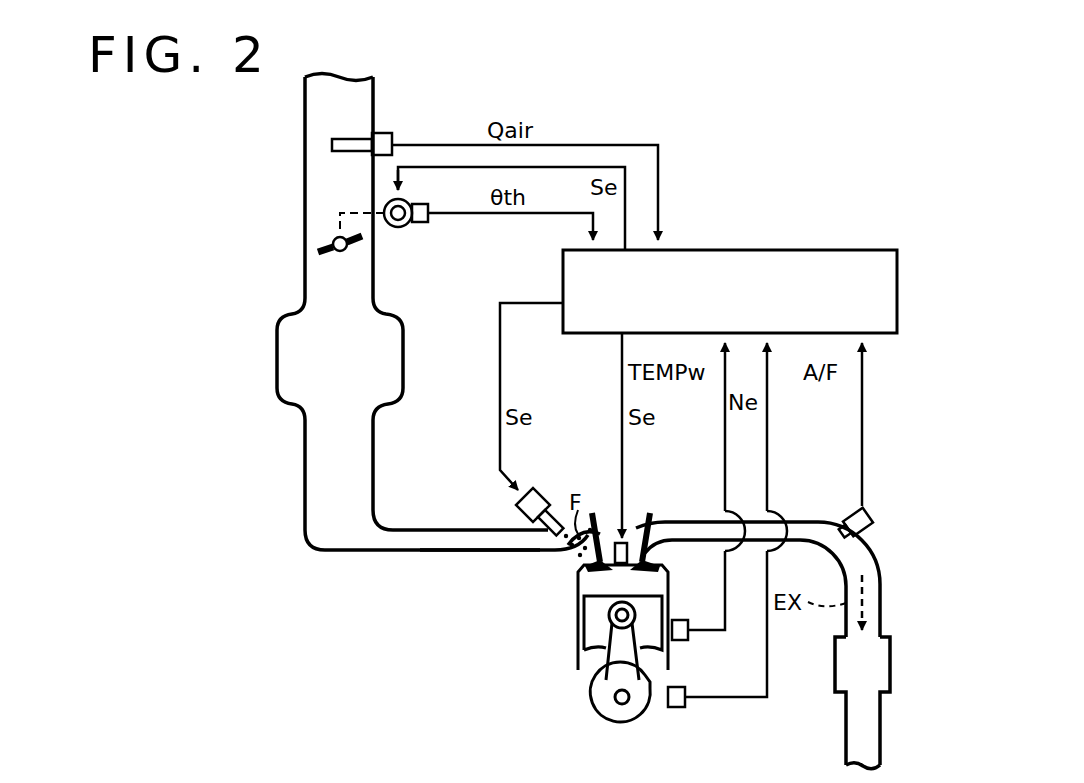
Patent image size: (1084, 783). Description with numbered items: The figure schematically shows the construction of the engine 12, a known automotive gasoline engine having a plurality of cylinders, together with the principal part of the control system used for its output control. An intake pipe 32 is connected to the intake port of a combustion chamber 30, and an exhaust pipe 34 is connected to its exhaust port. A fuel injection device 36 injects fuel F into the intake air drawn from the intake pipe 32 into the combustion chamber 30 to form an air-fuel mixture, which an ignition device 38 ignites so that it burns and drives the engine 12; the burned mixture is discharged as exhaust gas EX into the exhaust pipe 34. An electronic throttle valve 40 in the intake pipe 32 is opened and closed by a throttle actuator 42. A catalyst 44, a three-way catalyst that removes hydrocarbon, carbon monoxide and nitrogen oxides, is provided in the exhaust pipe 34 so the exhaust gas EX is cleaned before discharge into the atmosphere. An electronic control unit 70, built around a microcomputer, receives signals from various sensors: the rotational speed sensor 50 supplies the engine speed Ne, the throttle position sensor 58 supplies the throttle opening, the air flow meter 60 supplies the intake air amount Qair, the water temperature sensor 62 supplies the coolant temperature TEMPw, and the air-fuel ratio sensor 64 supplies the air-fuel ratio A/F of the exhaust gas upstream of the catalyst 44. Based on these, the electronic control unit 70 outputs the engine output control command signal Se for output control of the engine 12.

The engine 12 is at (576, 444).
The combustion chamber 30 is at (582, 583).
The intake pipe 32 is at (484, 528).
The exhaust pipe 34 is at (686, 522).
The fuel injection device 36 is at (543, 500).
The ignition device 38 is at (632, 530).
The electronic throttle valve 40 is at (331, 243).
The throttle actuator 42 is at (406, 224).
The catalyst 44 is at (836, 680).
The rotational speed sensor 50 is at (684, 706).
The throttle position sensor 58 is at (423, 205).
The air flow meter 60 is at (386, 133).
The water temperature sensor 62 is at (682, 640).
The air-fuel ratio sensor 64 is at (850, 512).
The electronic control unit 70 is at (854, 252).